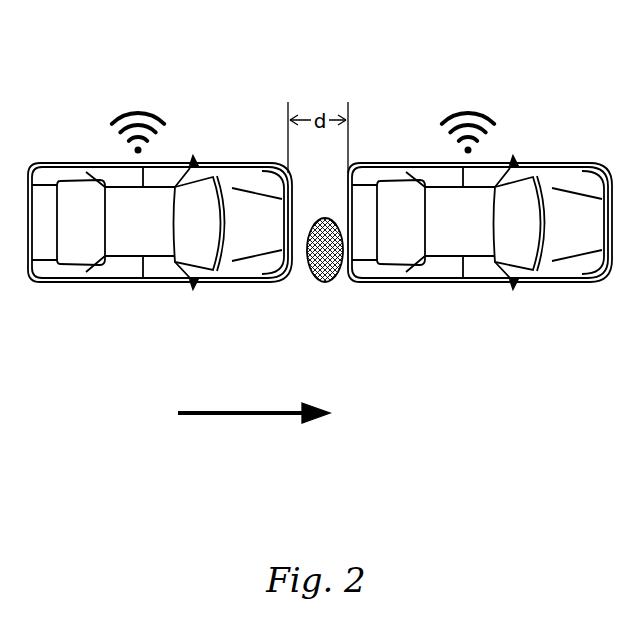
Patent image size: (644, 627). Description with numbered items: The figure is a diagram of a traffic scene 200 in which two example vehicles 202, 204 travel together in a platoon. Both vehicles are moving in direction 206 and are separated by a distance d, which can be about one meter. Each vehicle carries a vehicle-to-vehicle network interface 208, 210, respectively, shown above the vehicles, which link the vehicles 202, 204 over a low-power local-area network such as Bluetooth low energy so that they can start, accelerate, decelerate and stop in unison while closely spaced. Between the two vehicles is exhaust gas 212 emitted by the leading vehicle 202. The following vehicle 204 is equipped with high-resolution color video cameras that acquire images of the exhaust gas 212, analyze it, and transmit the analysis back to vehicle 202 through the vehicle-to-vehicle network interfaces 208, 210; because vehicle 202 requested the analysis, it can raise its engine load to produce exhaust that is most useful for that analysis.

The traffic scene 200 is at (303, 26).
The vehicle 202 is at (467, 278).
The vehicle 204 is at (148, 280).
The direction 206 is at (243, 415).
The vehicle-to-vehicle network interface 208 is at (500, 123).
The vehicle-to-vehicle network interface 210 is at (170, 123).
The exhaust gas 212 is at (323, 282).